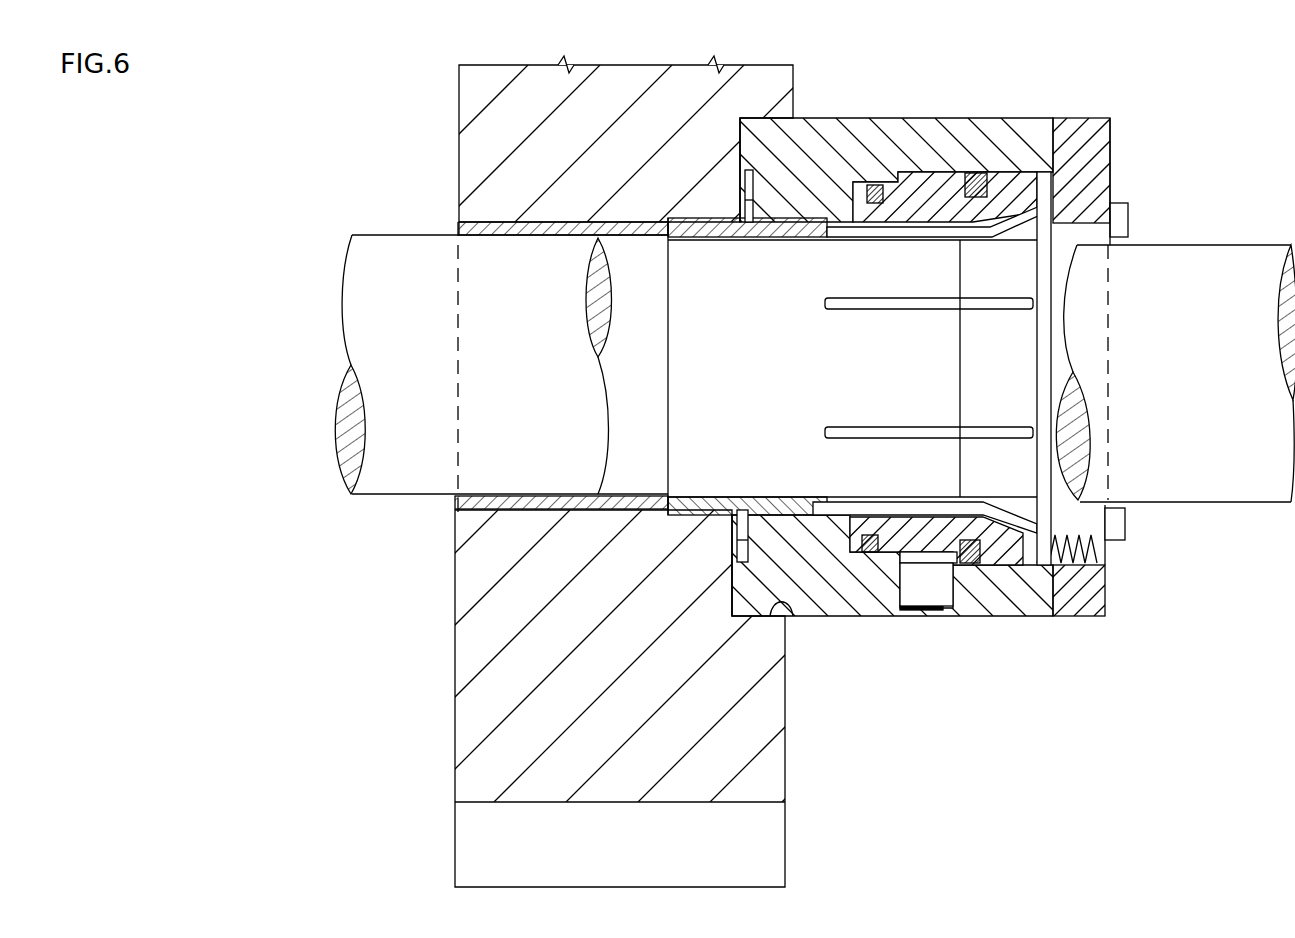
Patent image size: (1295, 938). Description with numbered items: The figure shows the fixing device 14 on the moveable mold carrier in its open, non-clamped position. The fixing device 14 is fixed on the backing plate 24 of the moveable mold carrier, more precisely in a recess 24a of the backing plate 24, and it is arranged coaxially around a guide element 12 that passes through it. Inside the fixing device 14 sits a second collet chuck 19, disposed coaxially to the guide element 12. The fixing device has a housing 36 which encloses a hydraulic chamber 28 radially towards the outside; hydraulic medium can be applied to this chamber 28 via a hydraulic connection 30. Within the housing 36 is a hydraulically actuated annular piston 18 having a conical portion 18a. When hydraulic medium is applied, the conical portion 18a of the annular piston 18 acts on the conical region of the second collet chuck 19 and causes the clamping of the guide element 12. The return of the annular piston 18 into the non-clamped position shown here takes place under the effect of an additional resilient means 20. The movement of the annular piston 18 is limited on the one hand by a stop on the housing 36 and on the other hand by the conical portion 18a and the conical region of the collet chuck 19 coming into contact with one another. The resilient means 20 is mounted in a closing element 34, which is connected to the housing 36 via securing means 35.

The guide element 12 is at (1253, 197).
The fixing device 14 is at (1152, 717).
The annular piston 18 is at (1015, 376).
The conical portion 18a is at (1048, 212).
The second collet chuck 19 is at (1047, 373).
The resilient means 20 is at (933, 428).
The backing plate 24 is at (640, 467).
The recess 24a is at (800, 617).
The hydraulic chamber 28 is at (928, 180).
The hydraulic connection 30 is at (927, 587).
The closing element 34 is at (1085, 160).
The securing means 35 is at (1115, 523).
The housing 36 is at (1005, 157).